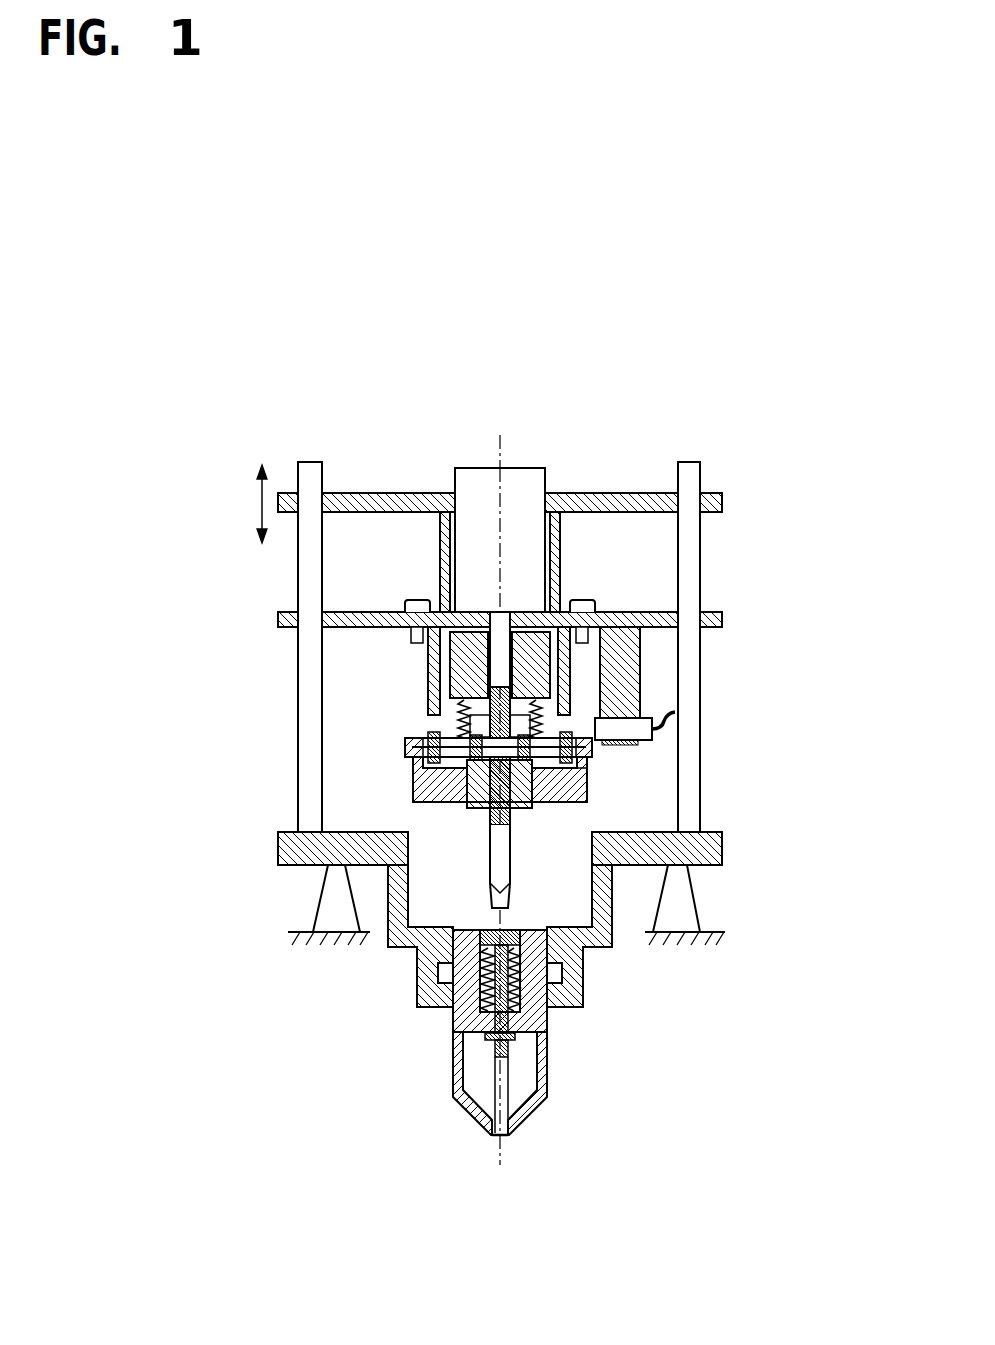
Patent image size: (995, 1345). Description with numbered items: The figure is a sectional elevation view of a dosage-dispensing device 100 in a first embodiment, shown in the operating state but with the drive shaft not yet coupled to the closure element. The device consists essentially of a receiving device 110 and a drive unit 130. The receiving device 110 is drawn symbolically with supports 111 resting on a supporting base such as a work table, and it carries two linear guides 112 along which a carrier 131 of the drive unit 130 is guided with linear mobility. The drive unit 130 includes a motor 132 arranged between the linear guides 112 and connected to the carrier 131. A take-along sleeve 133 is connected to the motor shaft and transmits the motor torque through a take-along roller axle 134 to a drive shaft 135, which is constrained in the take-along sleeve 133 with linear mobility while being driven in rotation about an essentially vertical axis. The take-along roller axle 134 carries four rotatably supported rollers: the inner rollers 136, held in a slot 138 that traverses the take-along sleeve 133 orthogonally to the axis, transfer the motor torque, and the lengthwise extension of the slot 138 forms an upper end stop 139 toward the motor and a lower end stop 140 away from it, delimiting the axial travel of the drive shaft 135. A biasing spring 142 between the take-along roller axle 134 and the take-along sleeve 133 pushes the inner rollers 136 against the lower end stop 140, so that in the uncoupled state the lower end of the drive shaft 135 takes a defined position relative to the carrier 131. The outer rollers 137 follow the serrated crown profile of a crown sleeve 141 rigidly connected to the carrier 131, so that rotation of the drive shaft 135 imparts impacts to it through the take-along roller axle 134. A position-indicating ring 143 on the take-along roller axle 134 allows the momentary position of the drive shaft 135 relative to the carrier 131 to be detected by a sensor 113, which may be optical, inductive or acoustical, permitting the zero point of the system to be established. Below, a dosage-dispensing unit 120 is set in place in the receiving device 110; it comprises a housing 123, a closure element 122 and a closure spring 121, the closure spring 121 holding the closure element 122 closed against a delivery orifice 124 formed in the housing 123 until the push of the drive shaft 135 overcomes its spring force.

The dosage-dispensing device 100 is at (362, 430).
The receiving device 110 is at (305, 848).
The supports 111 is at (676, 906).
The linear guides 112 is at (688, 575).
The sensor 113 is at (593, 741).
The dosage-dispensing unit 120 is at (666, 1084).
The closure spring 121 is at (515, 990).
The closure element 122 is at (502, 1067).
The housing 123 is at (537, 1017).
The delivery orifice 124 is at (513, 1150).
The drive unit 130 is at (514, 479).
The carrier 131 is at (612, 503).
The motor 132 is at (518, 510).
The take-along sleeve 133 is at (530, 668).
The take-along roller axle 134 is at (573, 747).
The drive shaft 135 is at (498, 848).
The inner rollers 136 is at (407, 758).
The outer rollers 137 is at (428, 735).
The slot 138 is at (620, 727).
The upper end stop 139 is at (537, 718).
The lower end stop 140 is at (585, 778).
The crown sleeve 141 is at (428, 677).
The biasing spring 142 is at (430, 718).
The position-indicating ring 143 is at (590, 790).